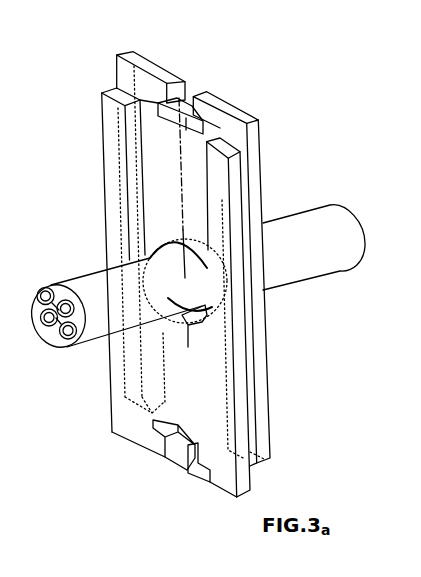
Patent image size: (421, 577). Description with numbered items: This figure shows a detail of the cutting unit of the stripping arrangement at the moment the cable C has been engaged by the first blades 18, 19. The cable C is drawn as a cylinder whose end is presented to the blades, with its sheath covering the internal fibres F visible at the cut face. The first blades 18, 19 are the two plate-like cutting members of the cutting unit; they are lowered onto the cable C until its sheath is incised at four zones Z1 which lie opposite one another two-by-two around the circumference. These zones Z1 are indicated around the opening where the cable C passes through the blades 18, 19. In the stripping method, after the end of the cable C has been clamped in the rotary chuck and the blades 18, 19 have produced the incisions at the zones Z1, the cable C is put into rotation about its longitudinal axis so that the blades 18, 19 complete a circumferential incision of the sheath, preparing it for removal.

The first blade 18 is at (225, 123).
The first blade 19 is at (132, 434).
The cable C is at (332, 226).
The optical fibres F is at (65, 341).
The zones Z1 is at (170, 300).